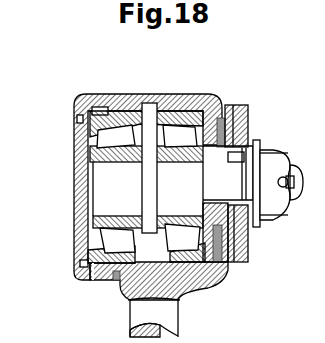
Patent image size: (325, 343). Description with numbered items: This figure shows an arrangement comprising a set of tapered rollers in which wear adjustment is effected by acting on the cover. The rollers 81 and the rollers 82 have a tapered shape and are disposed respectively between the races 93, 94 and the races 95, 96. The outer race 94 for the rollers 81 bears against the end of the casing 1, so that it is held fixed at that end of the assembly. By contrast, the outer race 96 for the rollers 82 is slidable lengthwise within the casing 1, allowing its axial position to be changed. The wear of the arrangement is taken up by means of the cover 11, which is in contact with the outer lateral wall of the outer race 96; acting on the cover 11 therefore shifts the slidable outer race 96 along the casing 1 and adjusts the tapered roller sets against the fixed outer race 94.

The casing 1 is at (163, 93).
The cover 11 is at (77, 182).
The rollers 81 is at (208, 94).
The rollers 82 is at (86, 95).
The race 93 is at (250, 142).
The outer race 94 is at (242, 105).
The race 95 is at (98, 152).
The outer race 96 is at (121, 130).